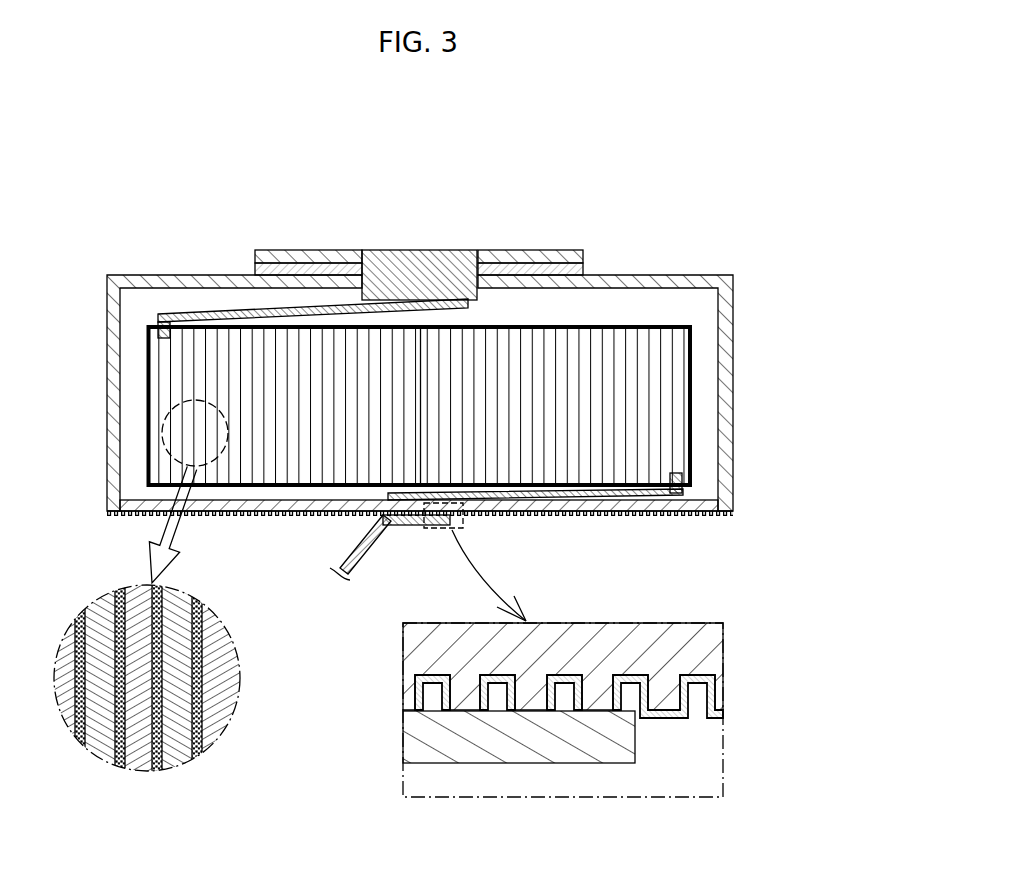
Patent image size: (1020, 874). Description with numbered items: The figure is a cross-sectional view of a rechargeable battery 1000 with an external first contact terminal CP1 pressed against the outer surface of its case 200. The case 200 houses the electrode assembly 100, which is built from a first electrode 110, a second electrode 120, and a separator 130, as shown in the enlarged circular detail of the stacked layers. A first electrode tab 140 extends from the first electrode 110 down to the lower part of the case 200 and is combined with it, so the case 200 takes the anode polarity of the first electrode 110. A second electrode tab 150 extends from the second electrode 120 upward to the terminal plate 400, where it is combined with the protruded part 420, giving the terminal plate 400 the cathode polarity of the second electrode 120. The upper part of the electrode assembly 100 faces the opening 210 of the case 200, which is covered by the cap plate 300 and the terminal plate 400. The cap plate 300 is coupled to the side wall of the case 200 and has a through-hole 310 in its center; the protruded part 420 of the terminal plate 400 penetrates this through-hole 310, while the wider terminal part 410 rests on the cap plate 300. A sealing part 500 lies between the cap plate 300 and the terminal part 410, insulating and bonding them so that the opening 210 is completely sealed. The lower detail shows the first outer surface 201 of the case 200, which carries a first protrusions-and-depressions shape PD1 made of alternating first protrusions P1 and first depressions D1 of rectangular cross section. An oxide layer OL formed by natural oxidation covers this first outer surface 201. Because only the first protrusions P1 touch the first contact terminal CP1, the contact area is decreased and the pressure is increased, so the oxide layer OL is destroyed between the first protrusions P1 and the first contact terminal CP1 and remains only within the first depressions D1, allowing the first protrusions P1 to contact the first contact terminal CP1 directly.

The rechargeable battery 1000 is at (393, 132).
The electrode assembly 100 is at (280, 444).
The first electrode 110 is at (138, 680).
The second electrode 120 is at (177, 680).
The separator 130 is at (158, 661).
The first electrode tab 140 is at (634, 497).
The second electrode tab 150 is at (193, 311).
The case 200 is at (463, 522).
The first outer surface 201 is at (563, 514).
The opening 210 is at (629, 282).
The cap plate 300 is at (606, 356).
The through-hole 310 is at (453, 280).
The terminal plate 400 is at (275, 247).
The terminal part 410 is at (517, 253).
The protruded part 420 is at (419, 246).
The sealing part 500 is at (550, 268).
The first contact terminal CP1 is at (363, 559).
The first depressions D1 is at (563, 672).
The first protrusions-and-depressions shape PD1 is at (597, 695).
The first protrusions P1 is at (563, 714).
The oxide layer OL is at (569, 714).